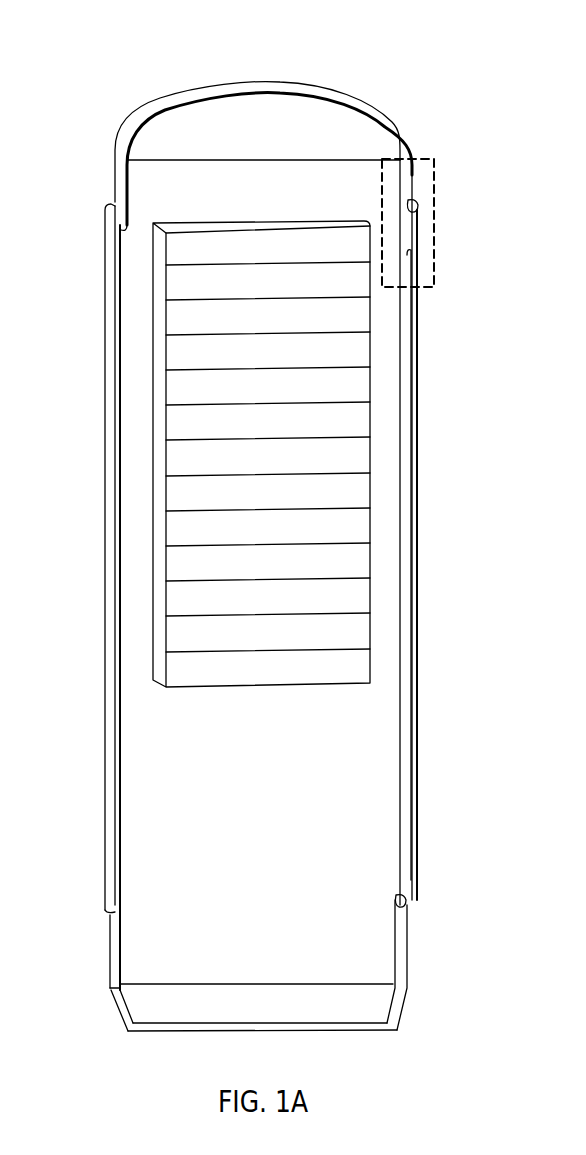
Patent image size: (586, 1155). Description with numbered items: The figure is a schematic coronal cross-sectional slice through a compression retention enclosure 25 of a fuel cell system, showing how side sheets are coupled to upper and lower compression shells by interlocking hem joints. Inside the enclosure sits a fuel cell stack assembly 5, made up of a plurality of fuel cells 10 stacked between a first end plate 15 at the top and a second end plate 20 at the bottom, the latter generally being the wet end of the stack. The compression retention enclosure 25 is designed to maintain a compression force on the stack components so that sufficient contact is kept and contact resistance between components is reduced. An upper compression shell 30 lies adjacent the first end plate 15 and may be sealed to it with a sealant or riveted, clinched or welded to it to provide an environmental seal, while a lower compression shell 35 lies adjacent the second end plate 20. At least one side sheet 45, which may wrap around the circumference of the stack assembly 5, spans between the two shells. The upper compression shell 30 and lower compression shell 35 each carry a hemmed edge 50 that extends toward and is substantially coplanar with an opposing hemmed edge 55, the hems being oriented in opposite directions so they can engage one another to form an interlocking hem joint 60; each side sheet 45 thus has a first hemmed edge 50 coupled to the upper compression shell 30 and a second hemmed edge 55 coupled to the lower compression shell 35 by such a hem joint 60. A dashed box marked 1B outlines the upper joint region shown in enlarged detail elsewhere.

The fuel cell stack assembly 5 is at (70, 98).
The fuel cells 10 is at (288, 280).
The first end plate 15 is at (317, 122).
The second end plate 20 is at (335, 1003).
The compression retention enclosure 25 is at (94, 353).
The upper compression shell 30 is at (182, 105).
The lower compression shell 35 is at (123, 1028).
The side sheet 45 is at (108, 701).
The first hemmed edge 50 is at (405, 205).
The second hemmed edge 55 is at (396, 898).
The interlocking hem joint 60 is at (418, 212).
The detail region 1B is at (437, 180).